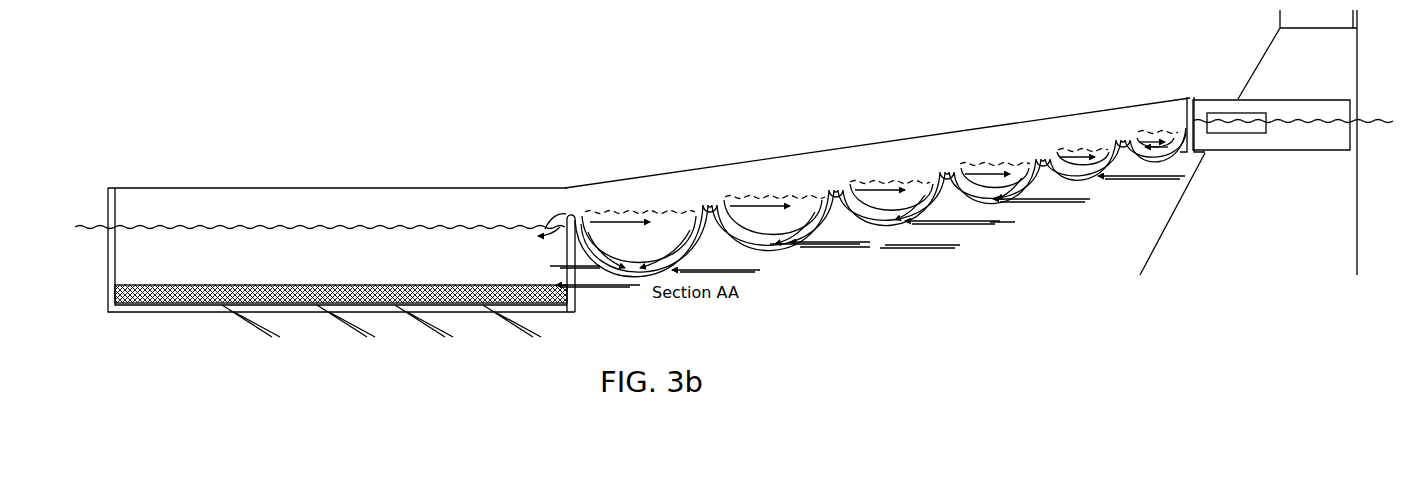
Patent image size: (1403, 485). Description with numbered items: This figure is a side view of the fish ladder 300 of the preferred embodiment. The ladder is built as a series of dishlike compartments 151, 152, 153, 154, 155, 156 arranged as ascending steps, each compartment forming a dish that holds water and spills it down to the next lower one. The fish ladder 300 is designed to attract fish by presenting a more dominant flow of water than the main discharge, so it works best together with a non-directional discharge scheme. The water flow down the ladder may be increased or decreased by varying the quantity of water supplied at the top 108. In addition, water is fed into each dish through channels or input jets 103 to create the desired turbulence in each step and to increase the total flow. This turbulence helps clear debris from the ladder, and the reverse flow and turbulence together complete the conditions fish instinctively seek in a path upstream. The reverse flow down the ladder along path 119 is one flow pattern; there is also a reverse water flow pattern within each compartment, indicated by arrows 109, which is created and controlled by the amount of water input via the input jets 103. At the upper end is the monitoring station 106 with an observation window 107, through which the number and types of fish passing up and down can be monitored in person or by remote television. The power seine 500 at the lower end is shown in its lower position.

The power seine 500 is at (192, 285).
The reverse flow path 119 is at (574, 210).
The reverse flow arrows 109 is at (737, 204).
The fish ladder 300 is at (932, 161).
The dishlike compartment 151 is at (636, 278).
The dishlike compartment 152 is at (784, 247).
The dishlike compartment 153 is at (893, 227).
The dishlike compartment 154 is at (1006, 206).
The dishlike compartment 155 is at (1100, 181).
The dishlike compartment 156 is at (1178, 160).
The input jets 103 is at (955, 224).
The monitoring station 106 is at (1322, 139).
The observation window 107 is at (1258, 113).
The top of ladder 108 is at (1197, 130).